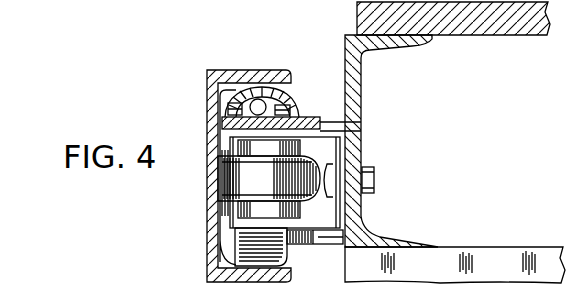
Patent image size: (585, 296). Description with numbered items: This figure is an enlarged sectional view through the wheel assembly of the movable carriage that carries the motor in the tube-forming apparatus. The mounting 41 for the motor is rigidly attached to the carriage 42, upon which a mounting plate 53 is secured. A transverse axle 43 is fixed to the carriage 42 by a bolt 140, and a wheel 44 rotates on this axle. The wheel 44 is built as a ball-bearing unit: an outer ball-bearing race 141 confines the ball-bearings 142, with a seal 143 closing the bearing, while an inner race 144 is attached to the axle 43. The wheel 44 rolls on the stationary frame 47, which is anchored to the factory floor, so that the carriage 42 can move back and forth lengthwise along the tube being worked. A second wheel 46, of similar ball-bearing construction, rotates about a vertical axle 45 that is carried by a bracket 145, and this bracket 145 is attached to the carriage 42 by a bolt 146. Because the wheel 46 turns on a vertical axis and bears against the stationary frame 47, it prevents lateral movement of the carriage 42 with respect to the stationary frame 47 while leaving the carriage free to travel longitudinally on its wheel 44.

The mounting 41 is at (512, 258).
The carriage 42 is at (362, 71).
The transverse axle 43 is at (226, 213).
The wheel 44 is at (283, 265).
The vertical axle 45 is at (226, 241).
The wheel 46 is at (214, 184).
The stationary frame 47 is at (212, 270).
The mounting plate 53 is at (511, 30).
The bolt 140 is at (375, 180).
The outer ball-bearing race 141 is at (244, 100).
The ball-bearings 142 is at (283, 75).
The seal 143 is at (283, 112).
The inner race 144 is at (223, 117).
The bracket 145 is at (336, 145).
The bolt 146 is at (327, 178).